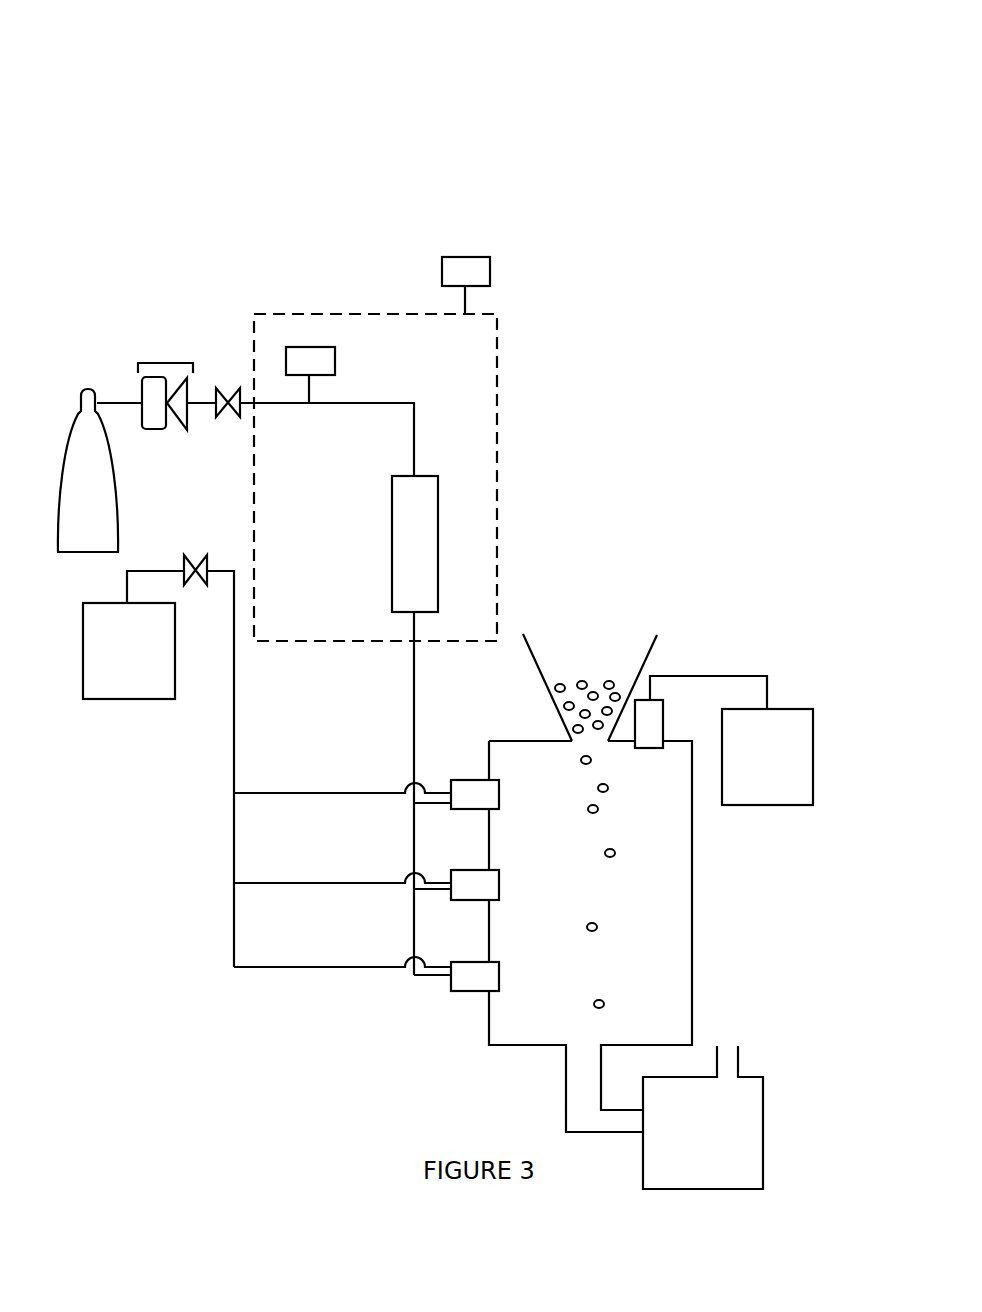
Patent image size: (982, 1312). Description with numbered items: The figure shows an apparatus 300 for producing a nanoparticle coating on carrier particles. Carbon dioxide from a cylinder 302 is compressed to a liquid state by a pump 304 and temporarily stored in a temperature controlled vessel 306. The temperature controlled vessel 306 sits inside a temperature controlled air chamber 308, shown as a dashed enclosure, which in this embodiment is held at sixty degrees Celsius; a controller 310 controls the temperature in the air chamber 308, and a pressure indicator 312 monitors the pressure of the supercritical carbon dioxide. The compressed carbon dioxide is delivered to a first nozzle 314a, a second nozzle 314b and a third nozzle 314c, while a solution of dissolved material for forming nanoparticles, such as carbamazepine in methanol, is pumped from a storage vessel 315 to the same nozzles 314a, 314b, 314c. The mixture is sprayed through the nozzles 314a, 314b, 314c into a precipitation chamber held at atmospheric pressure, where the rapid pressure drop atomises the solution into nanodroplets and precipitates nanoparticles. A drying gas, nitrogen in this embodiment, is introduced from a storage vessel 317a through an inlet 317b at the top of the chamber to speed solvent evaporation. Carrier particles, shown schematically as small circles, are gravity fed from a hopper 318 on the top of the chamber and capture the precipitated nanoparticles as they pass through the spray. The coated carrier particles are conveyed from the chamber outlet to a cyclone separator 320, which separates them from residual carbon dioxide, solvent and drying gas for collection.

The apparatus 300 is at (466, 165).
The cylinder 302 is at (88, 470).
The pump 304 is at (165, 362).
The temperature controlled vessel 306 is at (392, 545).
The temperature controlled air chamber 308 is at (320, 314).
The controller 310 is at (490, 270).
The pressure indicator 312 is at (335, 360).
The first nozzle 314a is at (468, 780).
The second nozzle 314b is at (499, 887).
The third nozzle 314c is at (462, 991).
The storage vessel 315 is at (129, 651).
The storage vessel 317a is at (731, 740).
The inlet 317b is at (645, 748).
The hopper 318 is at (657, 635).
The cyclone separator 320 is at (695, 1190).